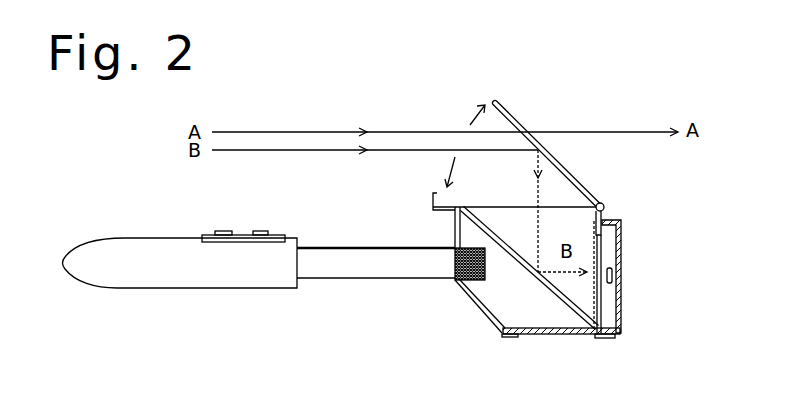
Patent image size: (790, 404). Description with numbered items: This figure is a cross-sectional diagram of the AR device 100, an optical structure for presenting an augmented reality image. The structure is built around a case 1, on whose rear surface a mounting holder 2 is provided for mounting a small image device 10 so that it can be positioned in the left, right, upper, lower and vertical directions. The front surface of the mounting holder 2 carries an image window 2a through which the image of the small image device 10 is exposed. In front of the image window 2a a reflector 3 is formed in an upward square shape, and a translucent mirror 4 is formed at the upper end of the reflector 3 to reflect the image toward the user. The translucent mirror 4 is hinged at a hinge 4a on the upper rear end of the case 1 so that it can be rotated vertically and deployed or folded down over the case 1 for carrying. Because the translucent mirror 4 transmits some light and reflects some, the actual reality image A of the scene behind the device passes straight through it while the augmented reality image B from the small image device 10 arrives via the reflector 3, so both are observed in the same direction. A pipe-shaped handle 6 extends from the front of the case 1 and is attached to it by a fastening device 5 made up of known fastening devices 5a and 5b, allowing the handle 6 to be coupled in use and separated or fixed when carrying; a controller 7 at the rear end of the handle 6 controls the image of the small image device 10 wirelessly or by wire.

The AR device 100 is at (550, 122).
The case 1 is at (559, 315).
The mounting holder 2 is at (618, 315).
The image window 2a is at (603, 245).
The reflector 3 is at (527, 277).
The translucent mirror 4 is at (507, 113).
The pivot shaft 4a is at (606, 206).
The light guide tube 5 is at (369, 280).
The fastening device 5a is at (455, 266).
The fastening device 5b is at (457, 251).
The handle 6 is at (232, 282).
The controller 7 is at (243, 235).
The small image device 10 is at (610, 290).